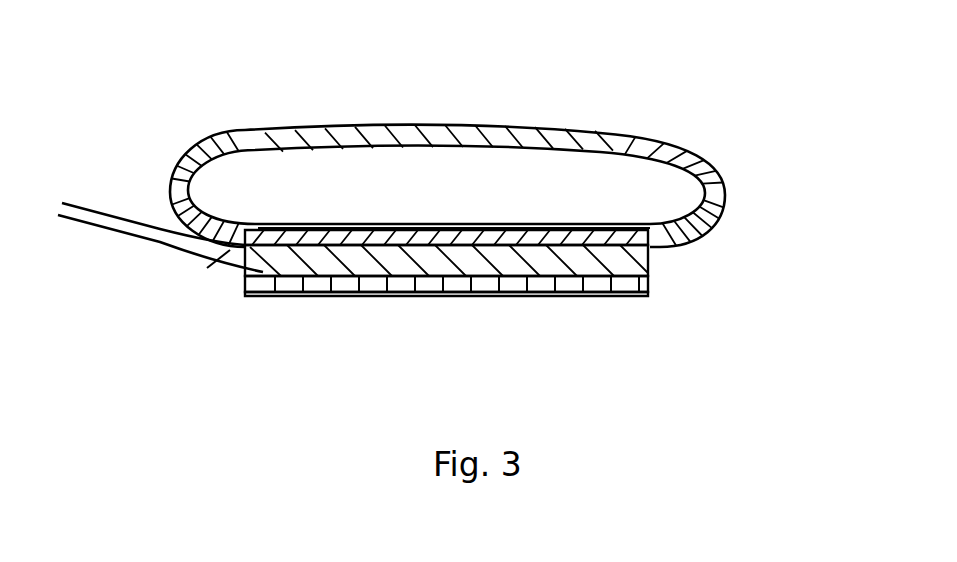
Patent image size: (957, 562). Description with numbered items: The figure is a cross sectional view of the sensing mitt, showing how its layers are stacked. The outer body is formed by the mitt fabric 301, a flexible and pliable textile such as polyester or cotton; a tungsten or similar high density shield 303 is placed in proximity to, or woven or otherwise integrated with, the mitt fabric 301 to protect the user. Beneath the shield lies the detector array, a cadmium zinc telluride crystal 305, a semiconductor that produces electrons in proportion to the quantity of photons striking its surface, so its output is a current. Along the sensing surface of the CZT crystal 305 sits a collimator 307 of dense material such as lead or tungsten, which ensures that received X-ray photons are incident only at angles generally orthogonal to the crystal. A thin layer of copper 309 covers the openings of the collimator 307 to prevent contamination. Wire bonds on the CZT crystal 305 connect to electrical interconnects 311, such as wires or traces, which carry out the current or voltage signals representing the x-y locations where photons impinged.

The mitt fabric 301 is at (588, 130).
The high density shield 303 is at (680, 238).
The cadmium zinc telluride (CZT) crystal 305 is at (650, 267).
The collimator 307 is at (650, 288).
The copper layer 309 is at (620, 297).
The electrical interconnects 311 is at (105, 215).